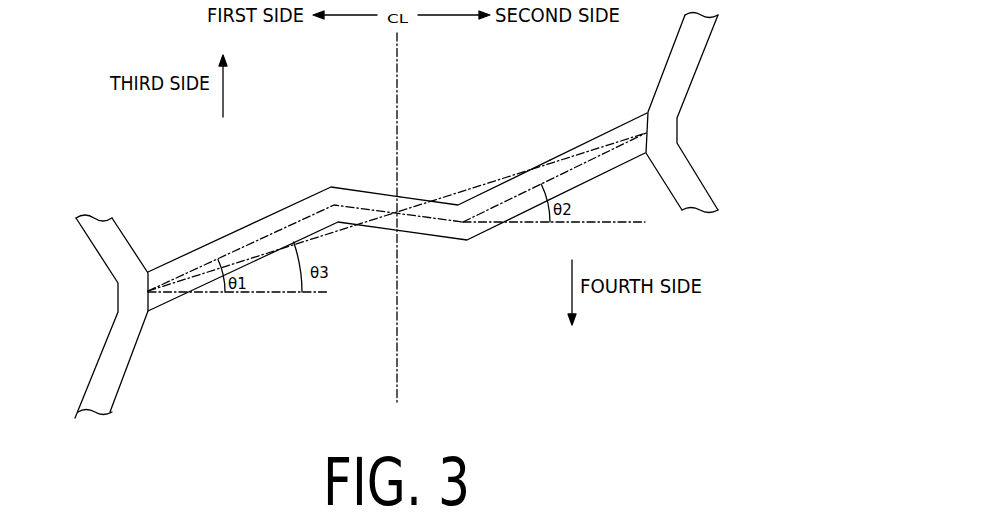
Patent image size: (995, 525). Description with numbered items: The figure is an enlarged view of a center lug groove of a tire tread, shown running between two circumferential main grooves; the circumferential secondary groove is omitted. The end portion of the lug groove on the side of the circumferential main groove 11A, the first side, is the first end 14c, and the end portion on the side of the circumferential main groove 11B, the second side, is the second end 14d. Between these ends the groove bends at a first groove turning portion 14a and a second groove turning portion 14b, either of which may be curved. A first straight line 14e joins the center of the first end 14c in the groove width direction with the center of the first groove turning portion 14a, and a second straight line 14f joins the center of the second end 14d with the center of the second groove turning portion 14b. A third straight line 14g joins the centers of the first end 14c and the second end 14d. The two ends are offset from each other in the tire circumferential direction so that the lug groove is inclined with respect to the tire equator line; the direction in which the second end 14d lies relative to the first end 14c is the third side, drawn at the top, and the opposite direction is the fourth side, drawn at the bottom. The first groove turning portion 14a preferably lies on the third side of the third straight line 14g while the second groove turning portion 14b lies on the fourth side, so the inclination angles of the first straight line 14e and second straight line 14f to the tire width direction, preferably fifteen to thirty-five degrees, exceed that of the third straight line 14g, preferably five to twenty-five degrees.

The circumferential main groove 11A is at (100, 229).
The circumferential main groove 11B is at (690, 58).
The first groove turning portion 14a is at (334, 205).
The second groove turning portion 14b is at (462, 226).
The first end 14c is at (148, 272).
The second end 14d is at (645, 155).
The first straight line 14e is at (260, 238).
The second straight line 14f is at (560, 175).
The third straight line 14g is at (477, 185).